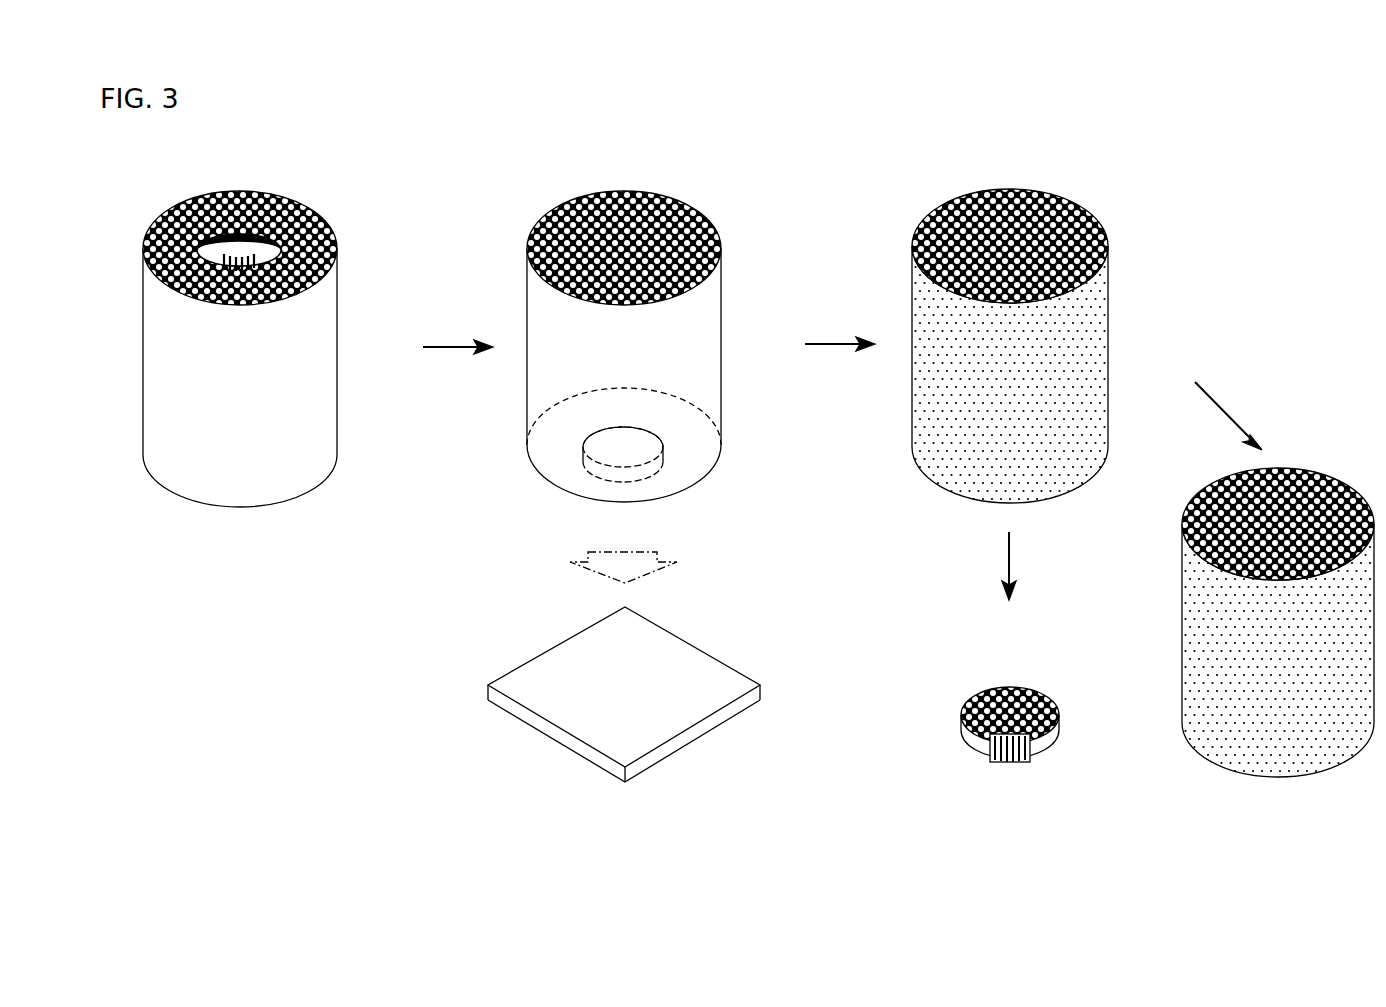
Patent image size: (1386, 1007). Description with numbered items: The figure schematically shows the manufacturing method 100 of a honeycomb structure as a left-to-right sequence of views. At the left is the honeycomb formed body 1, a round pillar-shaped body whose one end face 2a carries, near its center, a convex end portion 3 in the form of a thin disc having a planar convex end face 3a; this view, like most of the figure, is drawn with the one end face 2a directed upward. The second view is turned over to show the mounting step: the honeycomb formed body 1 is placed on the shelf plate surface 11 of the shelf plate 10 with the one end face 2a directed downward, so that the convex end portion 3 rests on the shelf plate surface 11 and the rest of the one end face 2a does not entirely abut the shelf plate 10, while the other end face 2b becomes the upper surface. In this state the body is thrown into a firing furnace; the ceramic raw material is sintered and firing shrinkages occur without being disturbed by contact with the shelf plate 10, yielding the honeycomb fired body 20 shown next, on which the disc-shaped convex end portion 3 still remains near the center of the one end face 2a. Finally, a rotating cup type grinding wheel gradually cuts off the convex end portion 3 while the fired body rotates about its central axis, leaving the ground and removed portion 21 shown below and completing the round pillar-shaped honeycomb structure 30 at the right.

The honeycomb formed body 1 is at (385, 290).
The one end face 2a is at (578, 476).
The other end face 2b is at (690, 197).
The convex end portion 3 is at (305, 213).
The convex end face 3a is at (627, 478).
The shelf plate 10 is at (634, 709).
The shelf plate surface 11 is at (715, 695).
The honeycomb fired body 20 is at (1133, 305).
The ground and removed portion 21 is at (1055, 661).
The honeycomb structure 30 is at (1308, 444).
The manufacturing method 100 is at (1127, 330).